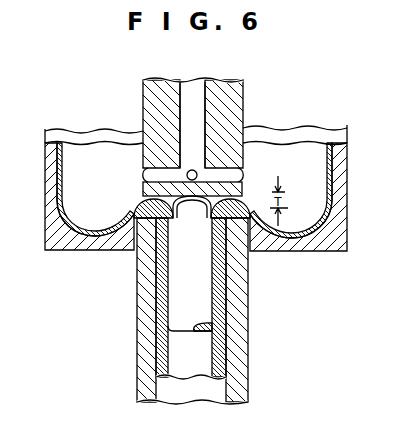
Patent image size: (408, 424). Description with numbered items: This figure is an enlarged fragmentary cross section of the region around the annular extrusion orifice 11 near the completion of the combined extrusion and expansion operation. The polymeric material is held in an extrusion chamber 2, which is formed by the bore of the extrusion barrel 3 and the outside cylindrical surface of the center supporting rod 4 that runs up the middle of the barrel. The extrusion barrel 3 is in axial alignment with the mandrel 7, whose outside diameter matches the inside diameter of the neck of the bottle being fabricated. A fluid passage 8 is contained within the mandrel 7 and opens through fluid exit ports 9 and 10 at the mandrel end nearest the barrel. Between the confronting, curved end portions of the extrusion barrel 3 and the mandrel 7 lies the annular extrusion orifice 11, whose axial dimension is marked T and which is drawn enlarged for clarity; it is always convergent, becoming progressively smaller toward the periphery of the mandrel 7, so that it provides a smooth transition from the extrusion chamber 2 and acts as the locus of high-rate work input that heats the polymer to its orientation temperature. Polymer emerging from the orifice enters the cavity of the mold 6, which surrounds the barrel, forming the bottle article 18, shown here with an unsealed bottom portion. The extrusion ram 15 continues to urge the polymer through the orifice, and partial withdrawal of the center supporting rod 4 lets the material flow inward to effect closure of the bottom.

The extrusion chamber 2 is at (137, 250).
The extrusion barrel 3 is at (246, 332).
The center supporting rod 4 is at (184, 258).
The mold 6 is at (295, 252).
The mandrel 7 is at (237, 104).
The fluid passage 8 is at (190, 92).
The fluid exit port 9 is at (143, 174).
The fluid exit port 10 is at (242, 174).
The annular extrusion orifice 11 is at (133, 200).
The extrusion ram 15 is at (160, 300).
The bottle article 18 is at (332, 224).